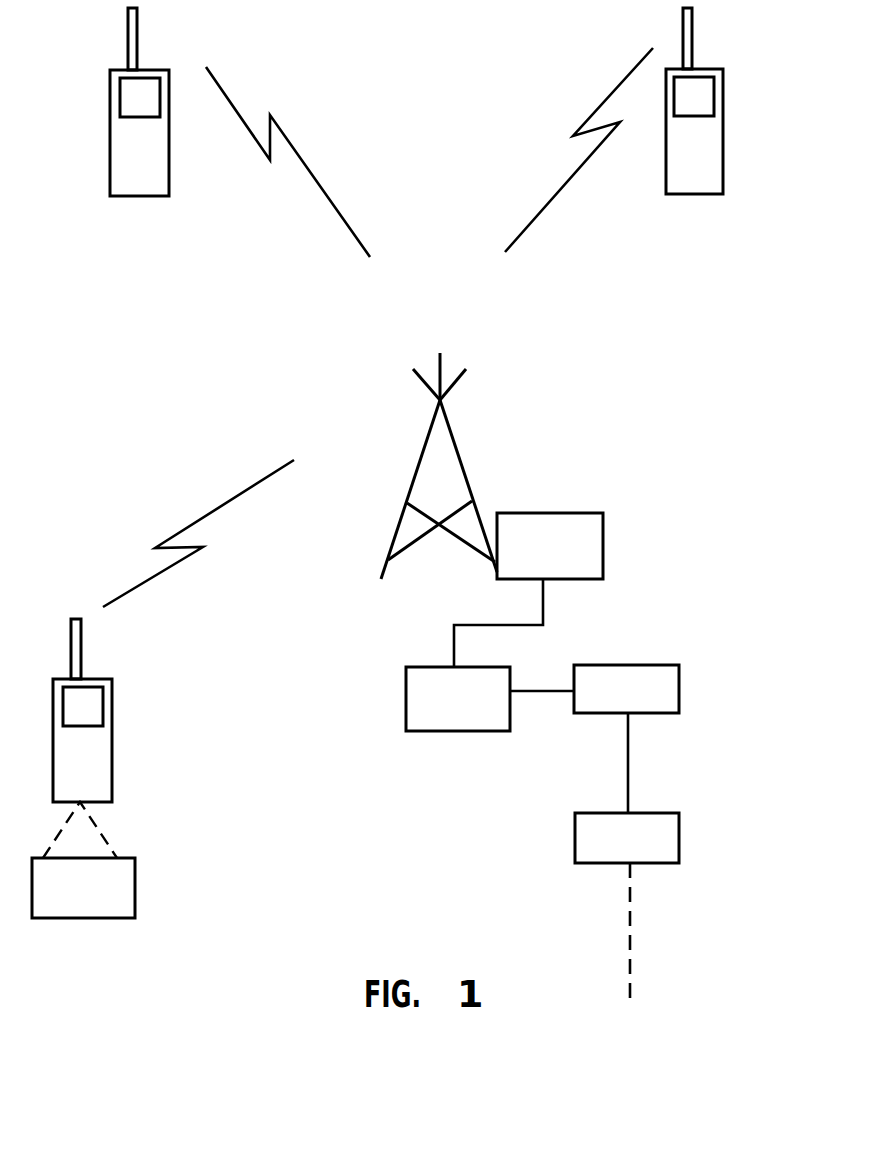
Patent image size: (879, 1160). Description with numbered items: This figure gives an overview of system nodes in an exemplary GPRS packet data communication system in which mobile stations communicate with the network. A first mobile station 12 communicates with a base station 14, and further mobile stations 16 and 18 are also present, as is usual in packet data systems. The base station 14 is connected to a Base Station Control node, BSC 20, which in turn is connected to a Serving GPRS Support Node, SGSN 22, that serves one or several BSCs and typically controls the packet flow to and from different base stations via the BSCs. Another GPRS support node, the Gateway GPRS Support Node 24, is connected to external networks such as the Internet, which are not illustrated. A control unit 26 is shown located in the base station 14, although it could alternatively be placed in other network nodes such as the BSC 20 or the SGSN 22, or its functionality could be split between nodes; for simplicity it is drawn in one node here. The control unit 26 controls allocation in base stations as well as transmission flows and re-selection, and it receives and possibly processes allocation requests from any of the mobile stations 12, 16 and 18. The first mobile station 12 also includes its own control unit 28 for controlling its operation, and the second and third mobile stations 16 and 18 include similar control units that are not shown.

The first mobile station 12 is at (120, 673).
The base station 14 is at (502, 493).
The second mobile station 16 is at (177, 65).
The third mobile station 18 is at (732, 63).
The Base Station Control node (BSC) 20 is at (403, 700).
The Serving GPRS Support Node (SGSN) 22 is at (667, 713).
The Gateway GPRS Support Node (GGSN) 24 is at (667, 863).
The control unit 26 is at (572, 513).
The control unit 28 is at (88, 918).